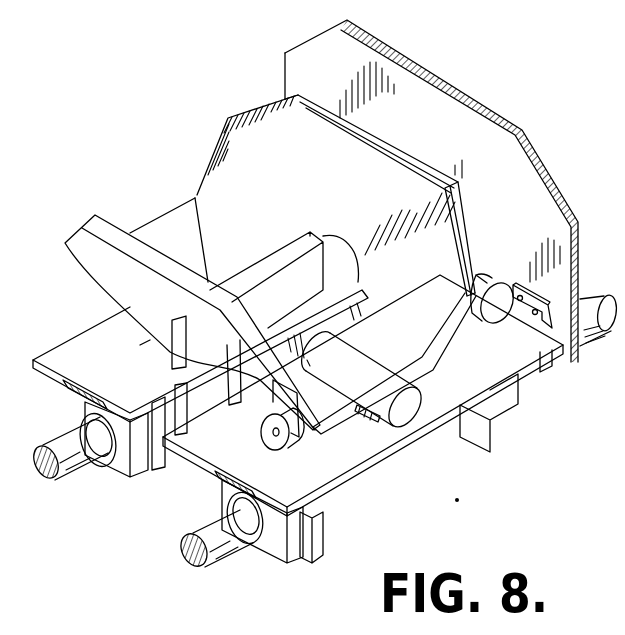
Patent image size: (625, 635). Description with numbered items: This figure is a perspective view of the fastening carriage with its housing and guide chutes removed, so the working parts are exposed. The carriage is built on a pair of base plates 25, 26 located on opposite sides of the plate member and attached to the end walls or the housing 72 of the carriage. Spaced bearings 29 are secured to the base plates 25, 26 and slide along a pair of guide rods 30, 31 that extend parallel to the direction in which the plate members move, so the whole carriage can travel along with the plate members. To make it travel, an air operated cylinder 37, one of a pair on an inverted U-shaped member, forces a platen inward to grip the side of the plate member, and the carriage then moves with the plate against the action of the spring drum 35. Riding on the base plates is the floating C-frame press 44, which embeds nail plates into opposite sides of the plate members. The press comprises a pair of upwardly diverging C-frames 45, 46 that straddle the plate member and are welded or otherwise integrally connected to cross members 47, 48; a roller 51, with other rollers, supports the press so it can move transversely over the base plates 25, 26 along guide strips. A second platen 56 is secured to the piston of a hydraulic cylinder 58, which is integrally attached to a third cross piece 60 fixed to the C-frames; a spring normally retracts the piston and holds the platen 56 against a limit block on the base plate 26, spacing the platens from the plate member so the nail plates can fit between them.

The base plate 25 is at (45, 373).
The base plate 26 is at (205, 470).
The bearings 29 is at (120, 457).
The guide rod 30 is at (50, 473).
The guide rod 31 is at (193, 557).
The spring drum 35 is at (260, 270).
The air operated cylinder 37 is at (486, 320).
The floating C-frame press 44 is at (134, 332).
The C-frame 45 is at (103, 288).
The C-frame 46 is at (462, 253).
The cross member 47 is at (168, 219).
The cross member 48 is at (405, 356).
The roller 51 is at (296, 441).
The second platen 56 is at (238, 403).
The hydraulic cylinder 58 is at (420, 401).
The third cross piece 60 is at (352, 342).
The housing 72 is at (580, 255).